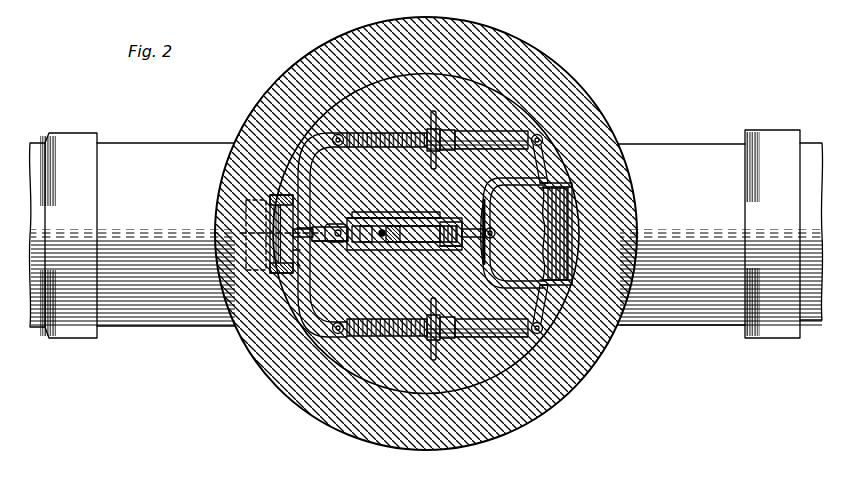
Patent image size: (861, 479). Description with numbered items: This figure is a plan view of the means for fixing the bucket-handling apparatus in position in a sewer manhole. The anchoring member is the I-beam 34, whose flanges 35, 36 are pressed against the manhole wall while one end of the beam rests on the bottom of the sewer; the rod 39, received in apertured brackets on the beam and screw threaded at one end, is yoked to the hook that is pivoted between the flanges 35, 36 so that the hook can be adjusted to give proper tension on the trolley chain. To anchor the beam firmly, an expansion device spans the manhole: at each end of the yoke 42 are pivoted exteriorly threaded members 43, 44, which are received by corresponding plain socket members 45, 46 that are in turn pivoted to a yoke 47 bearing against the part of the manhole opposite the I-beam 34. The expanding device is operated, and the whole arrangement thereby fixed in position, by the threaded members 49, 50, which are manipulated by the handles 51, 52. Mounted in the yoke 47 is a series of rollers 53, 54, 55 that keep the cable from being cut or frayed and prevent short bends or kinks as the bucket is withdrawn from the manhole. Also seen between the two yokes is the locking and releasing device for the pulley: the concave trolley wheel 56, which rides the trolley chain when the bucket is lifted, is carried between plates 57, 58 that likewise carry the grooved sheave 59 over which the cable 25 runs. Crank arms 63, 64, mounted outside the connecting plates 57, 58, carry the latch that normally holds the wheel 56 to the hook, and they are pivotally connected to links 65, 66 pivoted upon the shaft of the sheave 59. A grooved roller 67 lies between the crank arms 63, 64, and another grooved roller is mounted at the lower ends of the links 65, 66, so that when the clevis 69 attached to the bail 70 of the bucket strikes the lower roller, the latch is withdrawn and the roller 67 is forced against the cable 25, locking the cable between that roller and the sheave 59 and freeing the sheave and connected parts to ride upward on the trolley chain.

The cable 25 is at (395, 231).
The I-beam 34 is at (292, 251).
The flange 35 is at (282, 199).
The flange 36 is at (298, 263).
The rod 39 is at (298, 229).
The yoke 42 is at (312, 158).
The exteriorly threaded member 43 is at (383, 133).
The exteriorly threaded member 44 is at (380, 336).
The plain socket member 45 is at (490, 132).
The plain socket member 46 is at (500, 337).
The yoke 47 is at (538, 157).
The threaded member 49 is at (433, 147).
The threaded member 50 is at (430, 338).
The handle 51 is at (437, 162).
The handle 52 is at (438, 346).
The roller 53 is at (548, 197).
The roller 54 is at (556, 222).
The roller 55 is at (562, 248).
The concave trolley wheel 56 is at (328, 243).
The plate 57 is at (340, 226).
The plate 58 is at (442, 249).
The grooved sheave 59 is at (410, 240).
The crank arm 63 is at (383, 230).
The crank arm 64 is at (372, 250).
The link 65 is at (428, 222).
The link 66 is at (421, 250).
The grooved roller 67 is at (370, 228).
The clevis 69 is at (482, 212).
The bail 70 is at (486, 276).